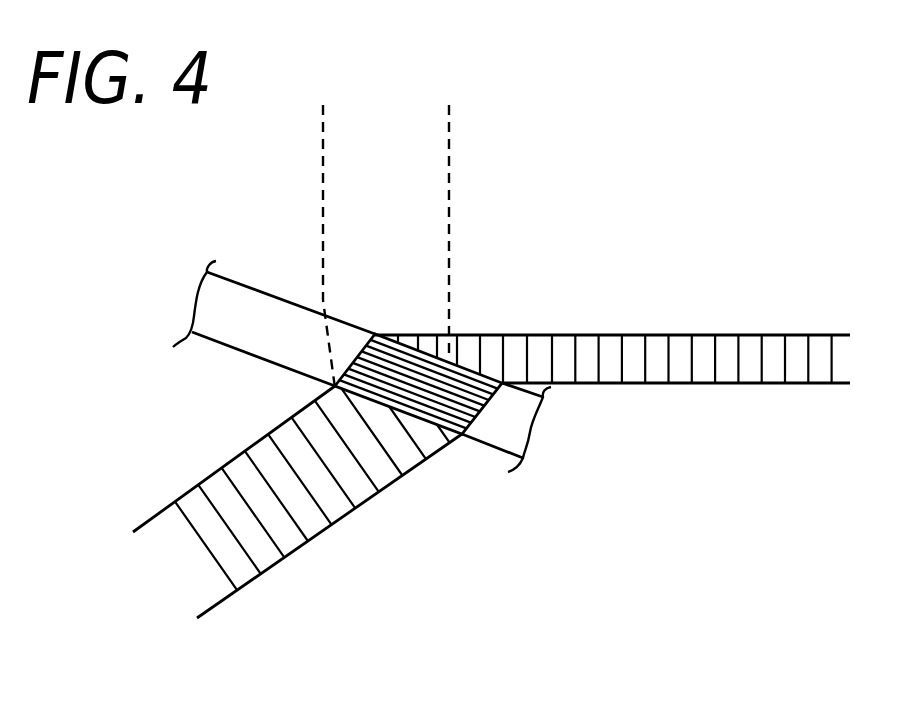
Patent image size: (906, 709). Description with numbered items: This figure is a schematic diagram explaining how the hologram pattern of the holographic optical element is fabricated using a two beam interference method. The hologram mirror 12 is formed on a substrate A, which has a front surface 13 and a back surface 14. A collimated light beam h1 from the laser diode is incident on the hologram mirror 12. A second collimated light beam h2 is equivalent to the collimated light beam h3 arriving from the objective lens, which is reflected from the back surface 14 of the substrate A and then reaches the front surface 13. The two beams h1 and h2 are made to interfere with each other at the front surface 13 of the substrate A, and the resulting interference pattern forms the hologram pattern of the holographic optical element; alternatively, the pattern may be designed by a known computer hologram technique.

The hologram mirror 12 is at (233, 300).
The front surface 13 is at (278, 297).
The back surface 14 is at (485, 447).
The collimated light beam h1 is at (678, 334).
The collimated light beam h2 is at (363, 507).
The collimated light beam h3 is at (449, 258).
The substrate A is at (212, 363).